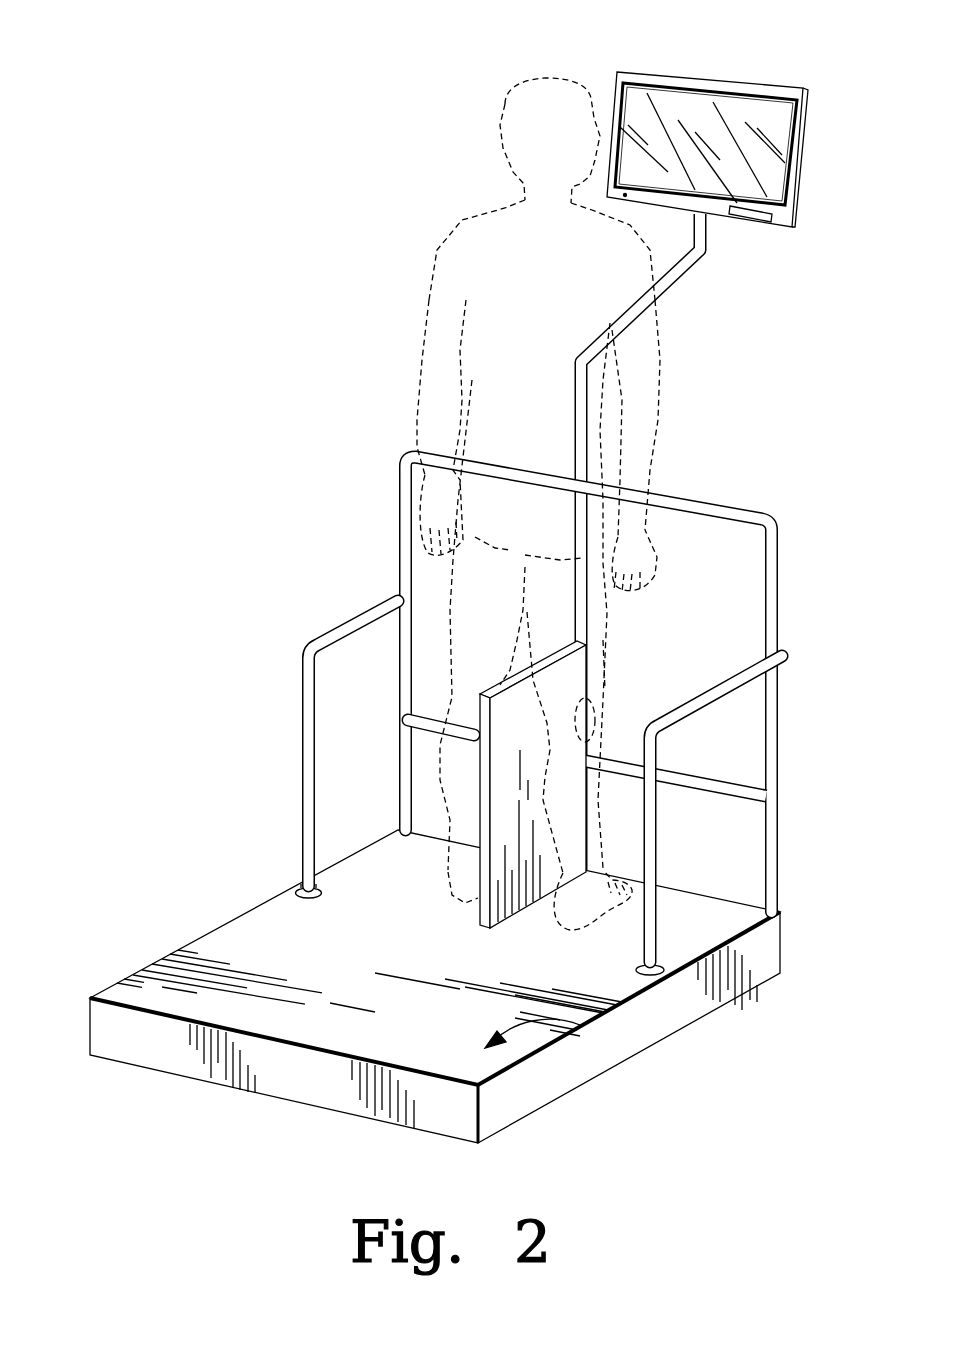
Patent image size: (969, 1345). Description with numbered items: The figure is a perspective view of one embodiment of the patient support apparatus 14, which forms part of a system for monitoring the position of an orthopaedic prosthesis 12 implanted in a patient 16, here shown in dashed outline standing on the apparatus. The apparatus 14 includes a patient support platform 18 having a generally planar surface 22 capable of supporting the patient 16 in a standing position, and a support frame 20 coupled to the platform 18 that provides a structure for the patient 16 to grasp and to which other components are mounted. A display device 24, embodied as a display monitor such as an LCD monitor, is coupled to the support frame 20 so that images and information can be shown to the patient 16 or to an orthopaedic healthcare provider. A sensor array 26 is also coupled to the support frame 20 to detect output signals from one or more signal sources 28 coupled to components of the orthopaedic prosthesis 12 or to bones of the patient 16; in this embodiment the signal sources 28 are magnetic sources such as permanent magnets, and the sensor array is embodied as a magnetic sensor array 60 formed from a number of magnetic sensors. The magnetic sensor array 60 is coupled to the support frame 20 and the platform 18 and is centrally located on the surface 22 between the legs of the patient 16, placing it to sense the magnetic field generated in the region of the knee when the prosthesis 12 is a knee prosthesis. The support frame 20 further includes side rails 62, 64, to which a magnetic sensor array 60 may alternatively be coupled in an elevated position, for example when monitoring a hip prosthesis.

The orthopaedic prosthesis 12 is at (612, 682).
The patient support apparatus 14 is at (300, 106).
The patient 16 is at (555, 78).
The patient support platform 18 is at (286, 1090).
The support frame 20 is at (710, 500).
The surface 22 is at (583, 1028).
The display device 24 is at (755, 78).
The sensor array 26 is at (478, 830).
The signal source 28 is at (612, 706).
The magnetic sensor array 60 is at (478, 920).
The side rail 62 is at (338, 625).
The side rail 64 is at (724, 688).